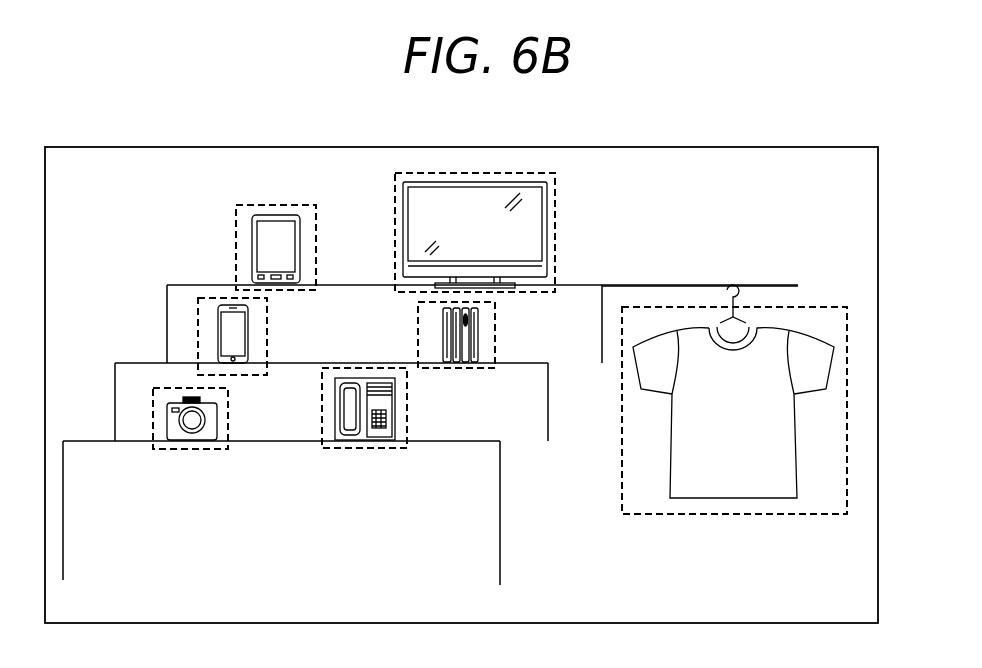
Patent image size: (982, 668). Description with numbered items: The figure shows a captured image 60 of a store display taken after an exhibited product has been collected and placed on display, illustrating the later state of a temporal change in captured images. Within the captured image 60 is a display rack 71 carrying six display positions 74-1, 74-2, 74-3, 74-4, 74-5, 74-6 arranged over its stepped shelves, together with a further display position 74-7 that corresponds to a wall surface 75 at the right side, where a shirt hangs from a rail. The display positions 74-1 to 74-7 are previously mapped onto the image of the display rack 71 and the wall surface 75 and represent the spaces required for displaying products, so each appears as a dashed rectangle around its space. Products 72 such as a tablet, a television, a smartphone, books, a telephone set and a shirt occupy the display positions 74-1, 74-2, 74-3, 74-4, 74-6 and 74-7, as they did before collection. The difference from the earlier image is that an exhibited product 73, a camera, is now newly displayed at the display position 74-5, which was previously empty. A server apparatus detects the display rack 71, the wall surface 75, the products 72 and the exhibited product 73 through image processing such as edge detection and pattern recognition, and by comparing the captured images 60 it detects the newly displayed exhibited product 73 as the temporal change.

The captured image 60 is at (250, 147).
The display rack 71 is at (177, 226).
The products 72 is at (300, 250).
The exhibited product 73 is at (217, 418).
The display position 74-1 is at (236, 261).
The display position 74-2 is at (555, 205).
The display position 74-3 is at (198, 330).
The display position 74-4 is at (495, 330).
The display position 74-5 is at (200, 451).
The display position 74-6 is at (407, 408).
The display position 74-7 is at (752, 516).
The wall surface 75 is at (772, 298).